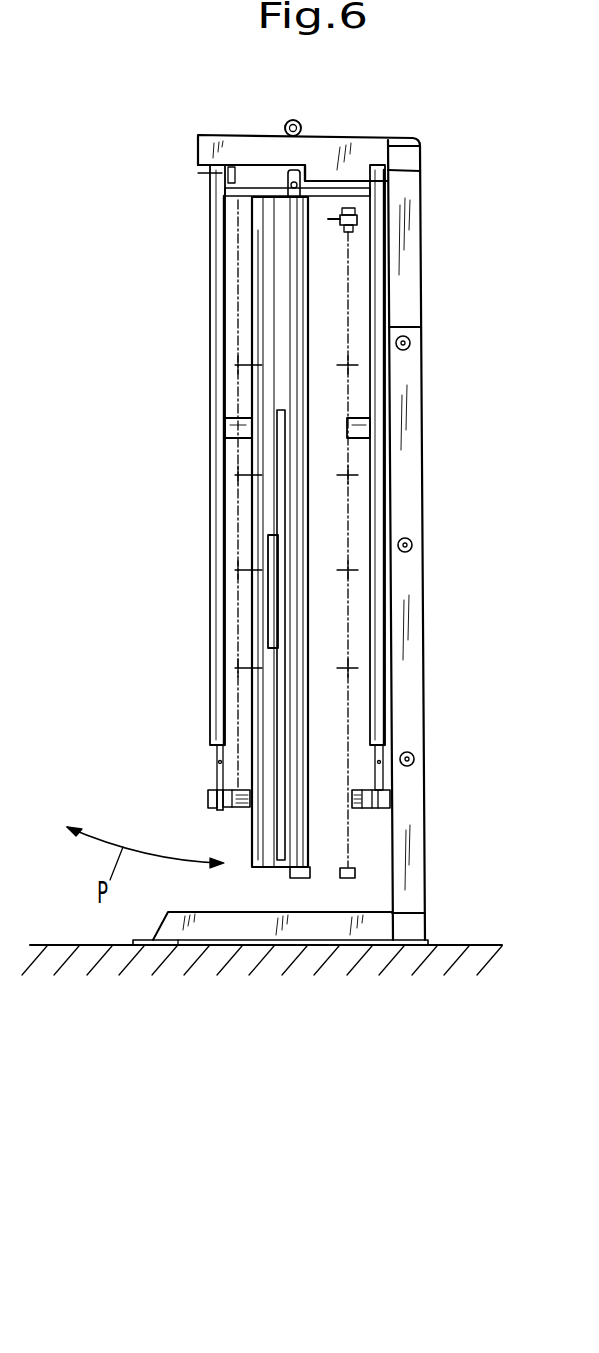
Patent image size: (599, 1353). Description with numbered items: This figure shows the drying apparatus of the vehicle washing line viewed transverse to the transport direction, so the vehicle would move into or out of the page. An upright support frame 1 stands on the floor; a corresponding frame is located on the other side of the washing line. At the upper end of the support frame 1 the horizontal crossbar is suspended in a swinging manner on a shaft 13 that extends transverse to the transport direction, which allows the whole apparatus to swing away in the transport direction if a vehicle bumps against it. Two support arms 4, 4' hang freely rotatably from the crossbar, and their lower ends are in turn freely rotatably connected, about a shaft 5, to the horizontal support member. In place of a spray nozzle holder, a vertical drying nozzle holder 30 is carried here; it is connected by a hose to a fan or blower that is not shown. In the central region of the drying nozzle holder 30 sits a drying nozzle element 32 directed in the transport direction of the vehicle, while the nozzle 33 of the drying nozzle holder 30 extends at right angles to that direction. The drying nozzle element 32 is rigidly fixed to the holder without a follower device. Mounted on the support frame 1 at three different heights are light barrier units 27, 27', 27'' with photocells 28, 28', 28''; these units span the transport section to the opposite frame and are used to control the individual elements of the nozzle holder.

The support frame 1 is at (407, 262).
The support arm 4 is at (426, 477).
The support arm 4' is at (196, 477).
The shaft 5 is at (208, 797).
The shaft 13 is at (302, 125).
The light barrier unit 27 is at (445, 774).
The light barrier unit 27' is at (457, 561).
The light barrier unit 27'' is at (443, 359).
The photocell 28 is at (455, 739).
The photocell 28' is at (453, 524).
The photocell 28'' is at (463, 327).
The drying nozzle holder 30 is at (268, 485).
The drying nozzle element 32 is at (273, 592).
The nozzle 33 is at (298, 553).